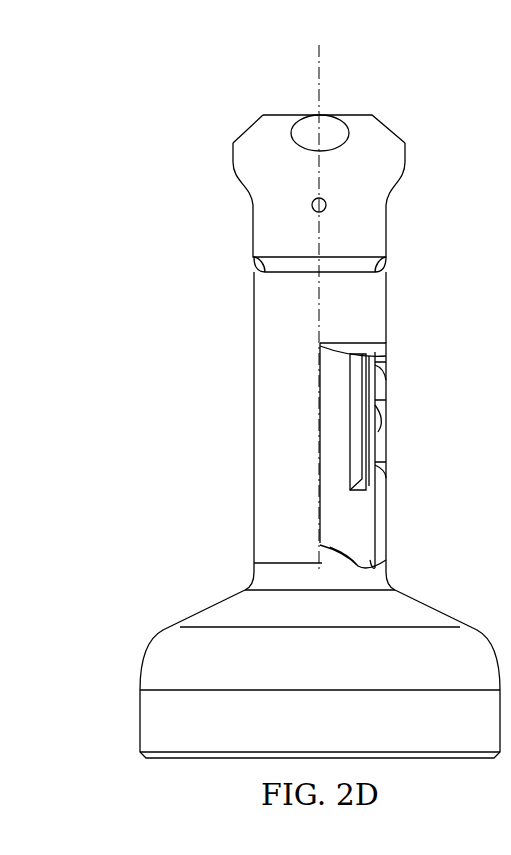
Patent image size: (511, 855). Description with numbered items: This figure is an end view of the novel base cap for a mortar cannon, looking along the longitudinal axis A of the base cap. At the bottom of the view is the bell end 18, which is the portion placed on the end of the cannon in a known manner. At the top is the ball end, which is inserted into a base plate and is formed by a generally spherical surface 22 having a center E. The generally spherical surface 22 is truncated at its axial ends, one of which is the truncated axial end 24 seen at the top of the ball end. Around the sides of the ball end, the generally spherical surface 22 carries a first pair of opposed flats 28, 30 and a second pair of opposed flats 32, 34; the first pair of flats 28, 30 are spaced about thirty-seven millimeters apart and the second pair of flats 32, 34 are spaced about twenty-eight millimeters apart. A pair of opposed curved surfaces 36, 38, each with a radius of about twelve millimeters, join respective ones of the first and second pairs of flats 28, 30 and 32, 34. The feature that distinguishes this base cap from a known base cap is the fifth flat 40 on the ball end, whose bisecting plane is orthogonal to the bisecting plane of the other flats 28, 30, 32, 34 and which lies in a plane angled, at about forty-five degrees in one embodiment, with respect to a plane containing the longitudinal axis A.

The bell end 18 is at (133, 646).
The generally spherical surface 22 is at (241, 130).
The truncated axial end 24 is at (372, 118).
The first flat 28 is at (406, 150).
The first flat 30 is at (233, 152).
The second flat 32 is at (387, 253).
The second flat 34 is at (253, 236).
The curved surface 36 is at (396, 177).
The curved surface 38 is at (240, 174).
The fifth flat 40 is at (318, 135).
The center E is at (326, 209).
The longitudinal axis A is at (322, 294).